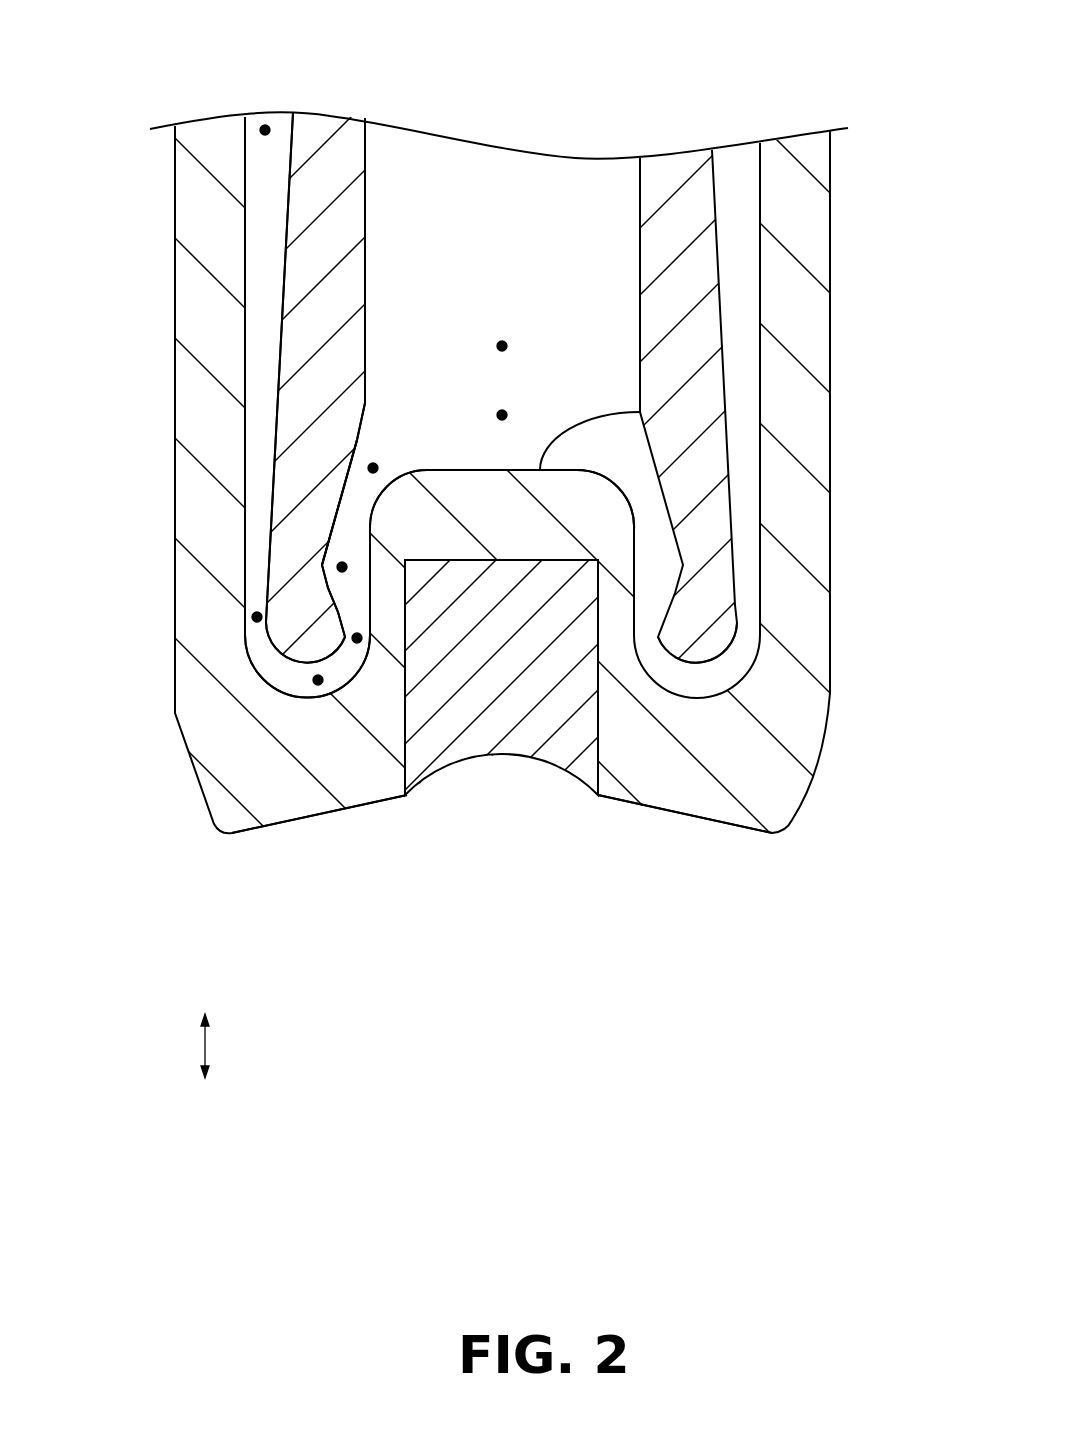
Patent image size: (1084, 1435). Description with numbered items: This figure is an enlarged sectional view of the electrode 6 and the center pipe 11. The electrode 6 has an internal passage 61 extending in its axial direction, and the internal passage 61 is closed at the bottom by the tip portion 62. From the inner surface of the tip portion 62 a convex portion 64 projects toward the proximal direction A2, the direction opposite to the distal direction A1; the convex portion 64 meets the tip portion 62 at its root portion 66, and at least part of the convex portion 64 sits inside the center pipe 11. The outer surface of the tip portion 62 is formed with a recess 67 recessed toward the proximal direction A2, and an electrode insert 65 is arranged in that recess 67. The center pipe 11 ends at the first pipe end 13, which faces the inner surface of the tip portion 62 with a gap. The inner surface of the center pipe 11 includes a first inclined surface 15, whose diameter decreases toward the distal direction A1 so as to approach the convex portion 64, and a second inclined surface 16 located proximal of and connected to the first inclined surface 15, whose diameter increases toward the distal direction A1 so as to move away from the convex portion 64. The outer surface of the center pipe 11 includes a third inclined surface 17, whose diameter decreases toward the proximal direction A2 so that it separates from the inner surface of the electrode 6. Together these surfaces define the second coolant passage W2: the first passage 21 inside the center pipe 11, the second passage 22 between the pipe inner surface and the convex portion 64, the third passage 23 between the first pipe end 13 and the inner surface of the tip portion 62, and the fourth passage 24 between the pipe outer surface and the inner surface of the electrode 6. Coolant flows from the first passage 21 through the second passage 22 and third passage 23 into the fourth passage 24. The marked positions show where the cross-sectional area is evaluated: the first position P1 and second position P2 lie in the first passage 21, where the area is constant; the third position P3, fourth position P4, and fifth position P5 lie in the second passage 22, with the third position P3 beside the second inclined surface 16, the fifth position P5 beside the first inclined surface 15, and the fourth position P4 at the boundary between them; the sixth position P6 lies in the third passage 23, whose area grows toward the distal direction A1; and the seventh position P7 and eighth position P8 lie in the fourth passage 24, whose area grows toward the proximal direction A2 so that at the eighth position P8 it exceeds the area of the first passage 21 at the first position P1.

The electrode 6 is at (833, 816).
The center pipe 11 is at (736, 293).
The first pipe end 13 is at (682, 663).
The first inclined surface 15 is at (337, 603).
The second inclined surface 16 is at (340, 498).
The third inclined surface 17 is at (290, 283).
The first passage 21 is at (470, 173).
The second passage 22 is at (343, 537).
The third passage 23 is at (300, 683).
The fourth passage 24 is at (258, 330).
The internal passage 61 is at (742, 177).
The tip portion 62 is at (618, 802).
The convex portion 64 is at (600, 412).
The electrode insert 65 is at (478, 740).
The root portion 66 is at (345, 690).
The recess 67 is at (598, 720).
The first position P1 is at (507, 346).
The second position P2 is at (497, 415).
The third position P3 is at (370, 466).
The fourth position P4 is at (338, 566).
The fifth position P5 is at (360, 641).
The sixth position P6 is at (318, 685).
The seventh position P7 is at (253, 619).
The eighth position P8 is at (265, 125).
The second coolant passage W2 is at (563, 182).
The distal direction A1 is at (210, 1091).
The proximal direction A2 is at (210, 1024).